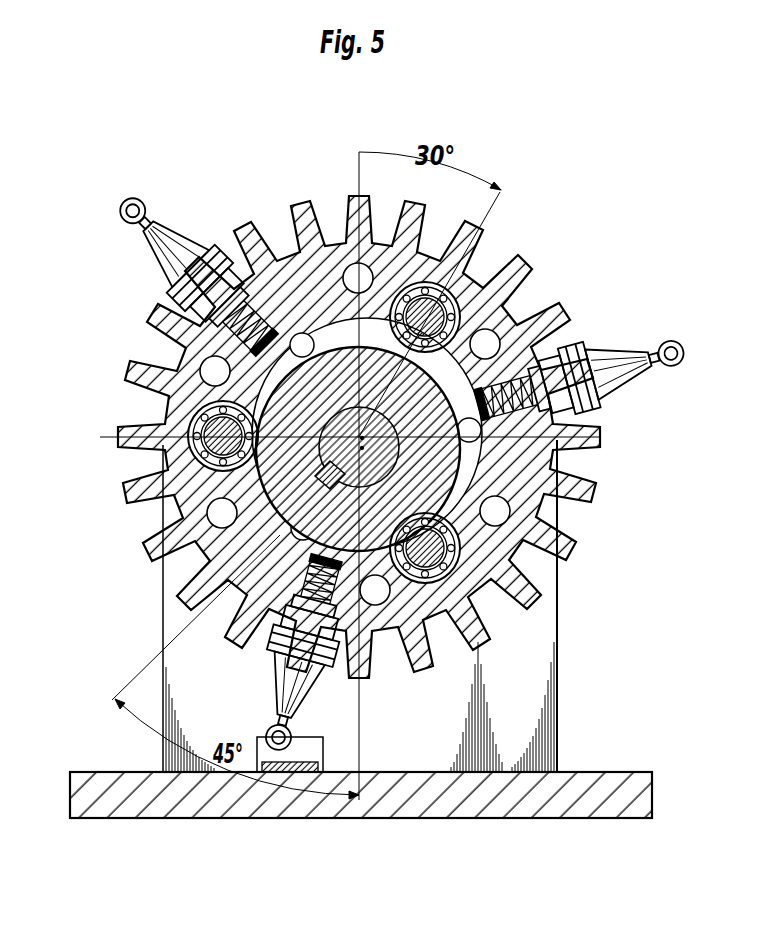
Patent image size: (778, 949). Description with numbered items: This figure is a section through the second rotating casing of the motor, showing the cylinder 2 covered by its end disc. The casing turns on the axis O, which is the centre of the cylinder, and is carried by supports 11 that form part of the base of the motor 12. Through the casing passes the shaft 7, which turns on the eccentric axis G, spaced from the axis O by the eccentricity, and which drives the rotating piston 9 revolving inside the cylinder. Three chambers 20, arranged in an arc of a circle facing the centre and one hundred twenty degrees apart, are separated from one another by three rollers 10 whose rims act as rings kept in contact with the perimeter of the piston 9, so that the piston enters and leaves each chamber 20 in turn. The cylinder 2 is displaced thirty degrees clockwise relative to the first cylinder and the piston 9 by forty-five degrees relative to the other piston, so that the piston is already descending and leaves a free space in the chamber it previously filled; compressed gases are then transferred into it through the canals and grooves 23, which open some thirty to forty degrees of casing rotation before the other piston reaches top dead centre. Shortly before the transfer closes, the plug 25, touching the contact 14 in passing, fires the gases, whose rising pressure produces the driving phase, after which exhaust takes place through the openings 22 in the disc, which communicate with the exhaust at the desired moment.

The cylinder 2 is at (188, 403).
The shaft 7 is at (355, 412).
The rotating piston 9 is at (267, 473).
The roller 10 is at (450, 295).
The support 11 is at (515, 692).
The base of the motor 12 is at (618, 790).
The contact 14 is at (313, 748).
The chamber 20 is at (270, 372).
The opening 22 is at (314, 333).
The canals and grooves 23 is at (270, 330).
The plug 25 is at (182, 256).
The axis of the casings O is at (362, 438).
The axis of the shaft G is at (362, 448).